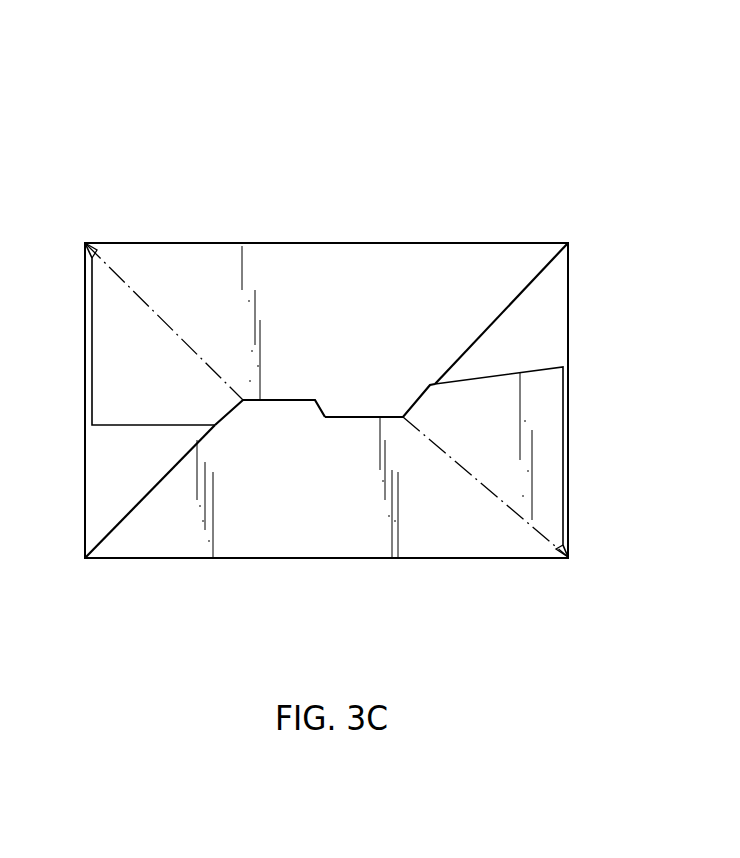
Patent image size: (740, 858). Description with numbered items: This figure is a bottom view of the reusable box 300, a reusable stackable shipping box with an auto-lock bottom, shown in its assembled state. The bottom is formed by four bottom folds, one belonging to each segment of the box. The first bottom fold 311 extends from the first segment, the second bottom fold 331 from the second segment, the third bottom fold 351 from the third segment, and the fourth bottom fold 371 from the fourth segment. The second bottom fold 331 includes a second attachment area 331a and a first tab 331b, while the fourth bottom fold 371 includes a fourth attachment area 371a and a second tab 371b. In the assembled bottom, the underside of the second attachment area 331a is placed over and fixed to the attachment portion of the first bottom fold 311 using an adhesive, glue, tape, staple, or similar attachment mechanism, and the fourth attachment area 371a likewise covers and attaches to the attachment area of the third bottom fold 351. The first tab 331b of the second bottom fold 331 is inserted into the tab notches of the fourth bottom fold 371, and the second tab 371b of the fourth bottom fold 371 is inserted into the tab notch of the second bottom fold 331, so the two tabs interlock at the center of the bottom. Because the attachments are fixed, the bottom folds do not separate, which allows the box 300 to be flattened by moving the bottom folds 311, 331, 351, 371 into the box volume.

The reusable box 300 is at (586, 80).
The first bottom fold 311 is at (545, 327).
The fourth bottom fold 371 is at (375, 260).
The fourth attachment area 371a is at (105, 362).
The second tab 371b is at (360, 417).
The third bottom fold 351 is at (105, 492).
The second bottom fold 331 is at (331, 538).
The second attachment area 331a is at (547, 467).
The first tab 331b is at (287, 399).